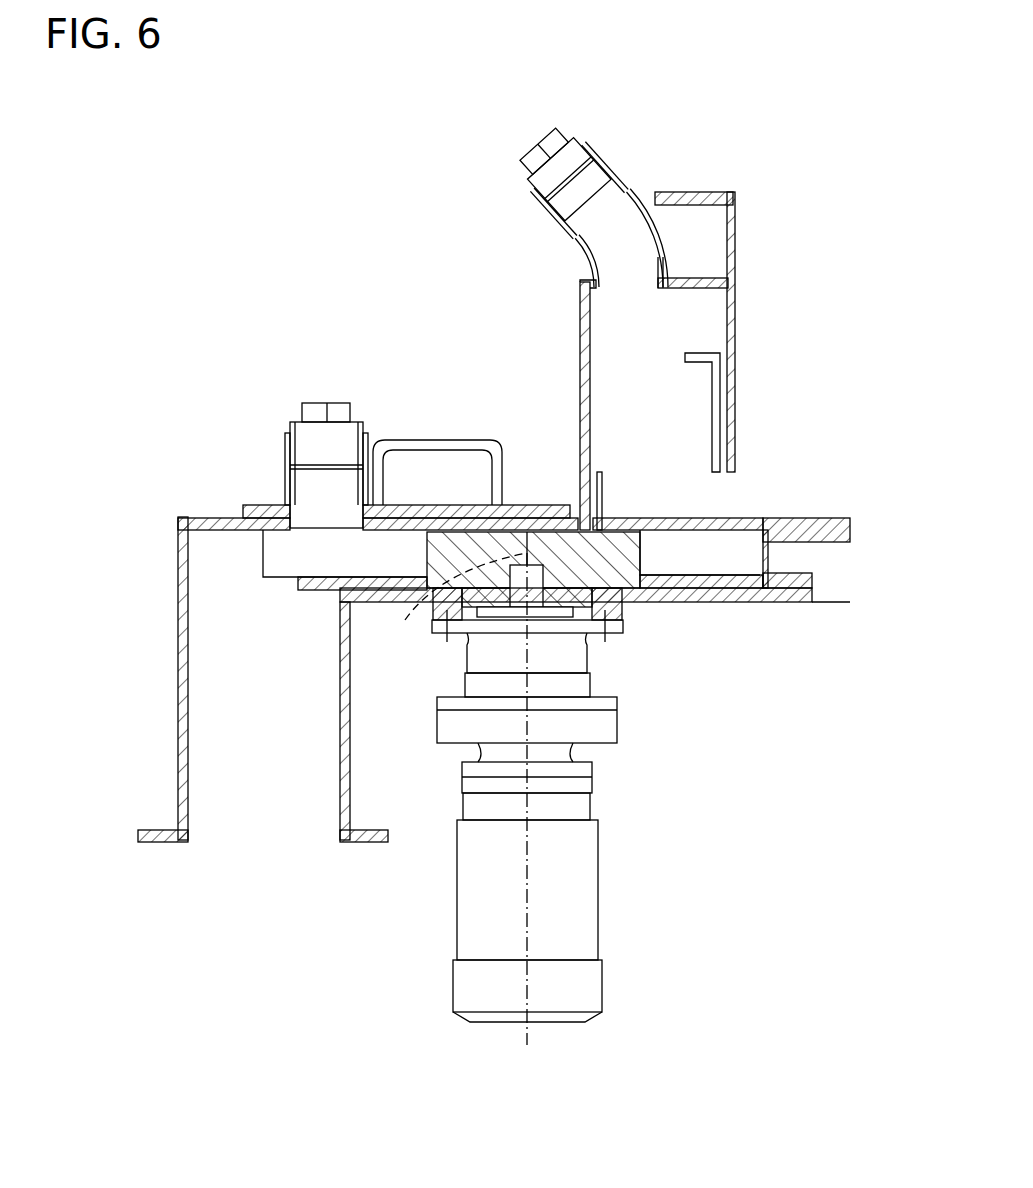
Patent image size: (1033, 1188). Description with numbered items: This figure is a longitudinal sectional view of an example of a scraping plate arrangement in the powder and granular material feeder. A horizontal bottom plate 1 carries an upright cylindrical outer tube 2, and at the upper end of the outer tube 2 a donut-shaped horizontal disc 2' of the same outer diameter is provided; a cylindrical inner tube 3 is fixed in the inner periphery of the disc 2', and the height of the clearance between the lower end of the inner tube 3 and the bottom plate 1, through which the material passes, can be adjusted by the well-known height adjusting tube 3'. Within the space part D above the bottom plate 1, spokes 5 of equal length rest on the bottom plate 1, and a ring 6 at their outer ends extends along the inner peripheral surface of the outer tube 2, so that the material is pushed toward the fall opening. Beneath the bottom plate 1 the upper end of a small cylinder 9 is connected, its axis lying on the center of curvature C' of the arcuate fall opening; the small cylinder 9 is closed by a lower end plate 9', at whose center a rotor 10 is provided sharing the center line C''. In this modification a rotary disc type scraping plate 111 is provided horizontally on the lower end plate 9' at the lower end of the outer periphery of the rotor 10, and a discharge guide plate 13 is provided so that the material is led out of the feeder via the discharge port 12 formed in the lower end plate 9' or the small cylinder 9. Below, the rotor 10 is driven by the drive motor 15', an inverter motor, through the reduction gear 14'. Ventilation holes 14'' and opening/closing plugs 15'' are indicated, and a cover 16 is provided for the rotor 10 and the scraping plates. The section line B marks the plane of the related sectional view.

The bottom plate 1 is at (820, 518).
The outer tube 2 is at (573, 405).
The horizontal disc 2' is at (694, 240).
The inner tube 3 is at (749, 332).
The height adjusting tube 3' is at (727, 412).
The spoke 5 is at (680, 522).
The ring 6 is at (603, 490).
The small cylinder 9 is at (726, 559).
The lower end plate 9' is at (576, 612).
The rotor 10 is at (606, 545).
The discharge port 12 is at (282, 700).
The discharge guide plate 13 is at (292, 560).
The reduction gear 14' is at (556, 715).
The ventilation hole 14'' is at (450, 323).
The drive motor 15' is at (564, 921).
The opening/closing plug 15'' is at (450, 326).
The cover 16 is at (458, 505).
The rotary disc type scraping plate 111 is at (362, 563).
The section line B is at (168, 543).
The center of curvature C' is at (452, 610).
The center line C'' is at (504, 887).
The space part D is at (666, 427).